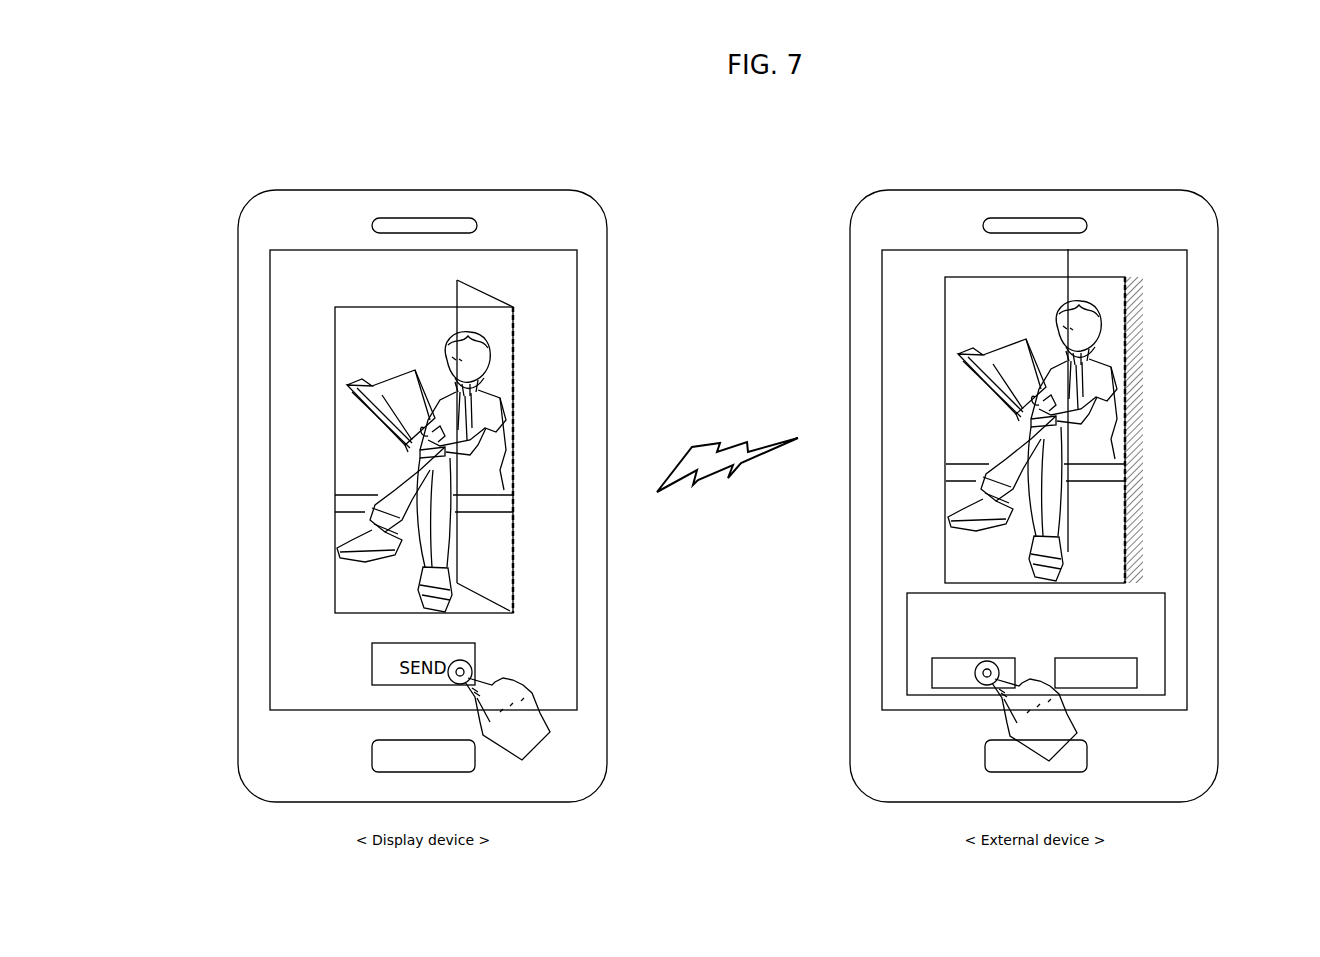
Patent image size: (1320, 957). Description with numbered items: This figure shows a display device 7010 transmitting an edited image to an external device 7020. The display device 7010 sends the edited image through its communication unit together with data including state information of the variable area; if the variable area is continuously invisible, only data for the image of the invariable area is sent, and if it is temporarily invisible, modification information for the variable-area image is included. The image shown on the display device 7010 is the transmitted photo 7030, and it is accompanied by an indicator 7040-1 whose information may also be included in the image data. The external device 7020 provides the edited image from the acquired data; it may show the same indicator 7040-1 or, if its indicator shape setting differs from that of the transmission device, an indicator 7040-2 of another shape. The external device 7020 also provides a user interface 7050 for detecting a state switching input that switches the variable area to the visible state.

The display device 7010 is at (519, 204).
The external device 7020 is at (1129, 204).
The photo displayed on display device 7030 is at (347, 435).
The indicator 7040-1 is at (477, 293).
The indicator 7040-2 is at (1143, 372).
The user interface 7050 is at (920, 641).